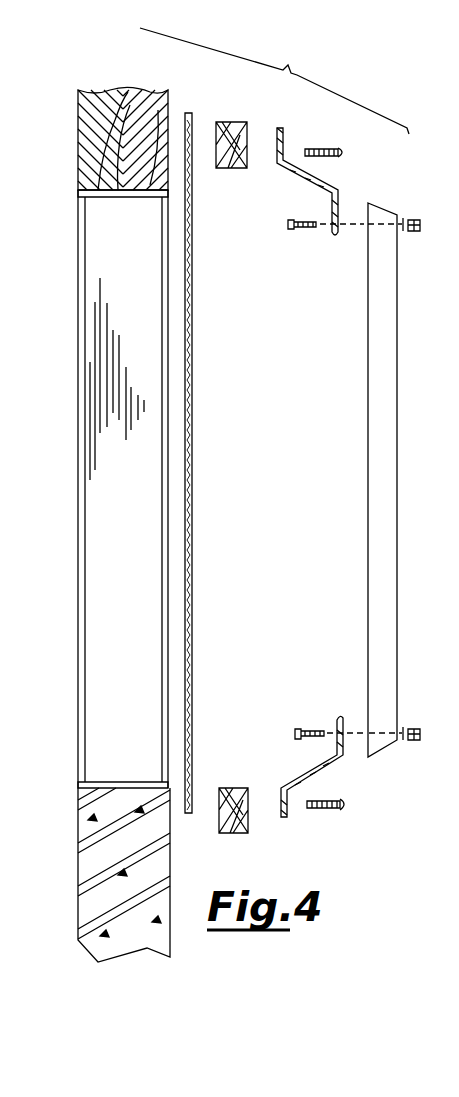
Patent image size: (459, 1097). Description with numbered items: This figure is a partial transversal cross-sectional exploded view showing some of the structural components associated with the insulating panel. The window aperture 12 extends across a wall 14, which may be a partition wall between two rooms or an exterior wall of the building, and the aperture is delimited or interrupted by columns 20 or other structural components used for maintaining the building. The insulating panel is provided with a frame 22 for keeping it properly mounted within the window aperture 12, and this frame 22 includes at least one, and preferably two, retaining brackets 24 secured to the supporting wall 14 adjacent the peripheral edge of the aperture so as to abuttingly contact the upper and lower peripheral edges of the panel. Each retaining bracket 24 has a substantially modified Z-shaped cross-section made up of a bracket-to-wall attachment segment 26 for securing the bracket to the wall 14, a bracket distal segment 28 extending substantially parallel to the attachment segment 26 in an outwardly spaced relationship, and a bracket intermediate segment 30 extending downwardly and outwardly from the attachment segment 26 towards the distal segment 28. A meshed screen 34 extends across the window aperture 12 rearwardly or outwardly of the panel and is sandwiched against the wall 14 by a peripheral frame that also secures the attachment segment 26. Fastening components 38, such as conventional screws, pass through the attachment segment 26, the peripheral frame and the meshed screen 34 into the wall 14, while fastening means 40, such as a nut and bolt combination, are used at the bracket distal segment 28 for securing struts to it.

The window aperture 12 is at (115, 532).
The wall 14 is at (160, 92).
The column 20 is at (143, 595).
The frame 22 is at (290, 70).
The retaining bracket 24 is at (348, 178).
The bracket-to-wall attachment segment 26 is at (280, 138).
The bracket distal segment 28 is at (345, 228).
The bracket intermediate segment 30 is at (302, 177).
The meshed screen 34 is at (192, 328).
The fastening component 38 is at (342, 807).
The fastening means 40 is at (298, 725).